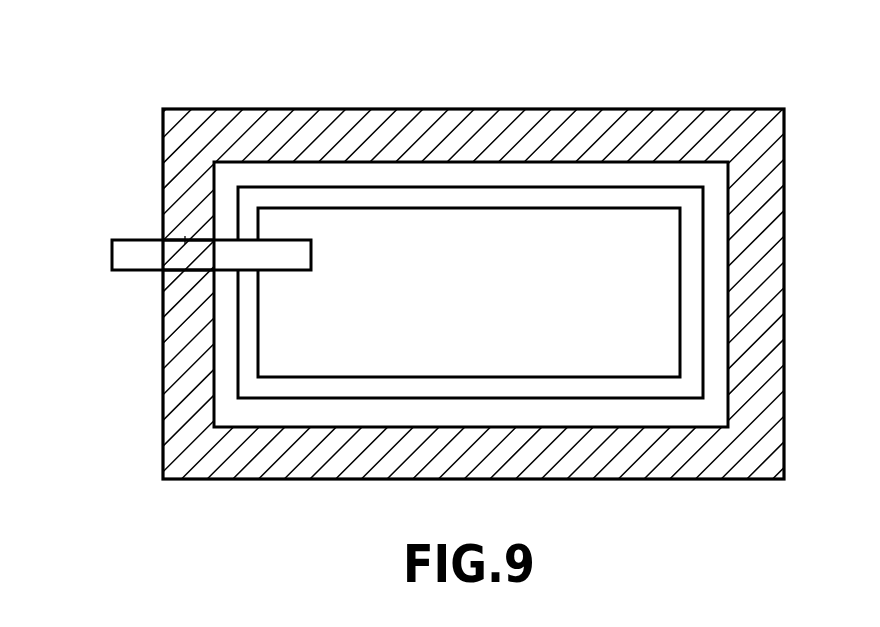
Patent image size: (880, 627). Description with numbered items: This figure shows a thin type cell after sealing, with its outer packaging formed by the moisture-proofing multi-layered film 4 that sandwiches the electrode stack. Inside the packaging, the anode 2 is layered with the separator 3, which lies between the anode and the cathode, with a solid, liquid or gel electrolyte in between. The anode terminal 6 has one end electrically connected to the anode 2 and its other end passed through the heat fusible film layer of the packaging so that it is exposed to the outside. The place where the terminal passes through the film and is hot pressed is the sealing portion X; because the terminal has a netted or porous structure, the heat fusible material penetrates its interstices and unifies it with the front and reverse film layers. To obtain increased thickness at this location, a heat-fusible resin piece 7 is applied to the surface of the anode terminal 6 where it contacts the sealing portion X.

The anode 2 is at (634, 233).
The separator 3 is at (557, 202).
The moisture-proofing multi-layered film 4 is at (477, 180).
The anode terminal 6 is at (122, 257).
The heat-fusible resin piece 7 is at (185, 258).
The sealing portion X is at (185, 242).